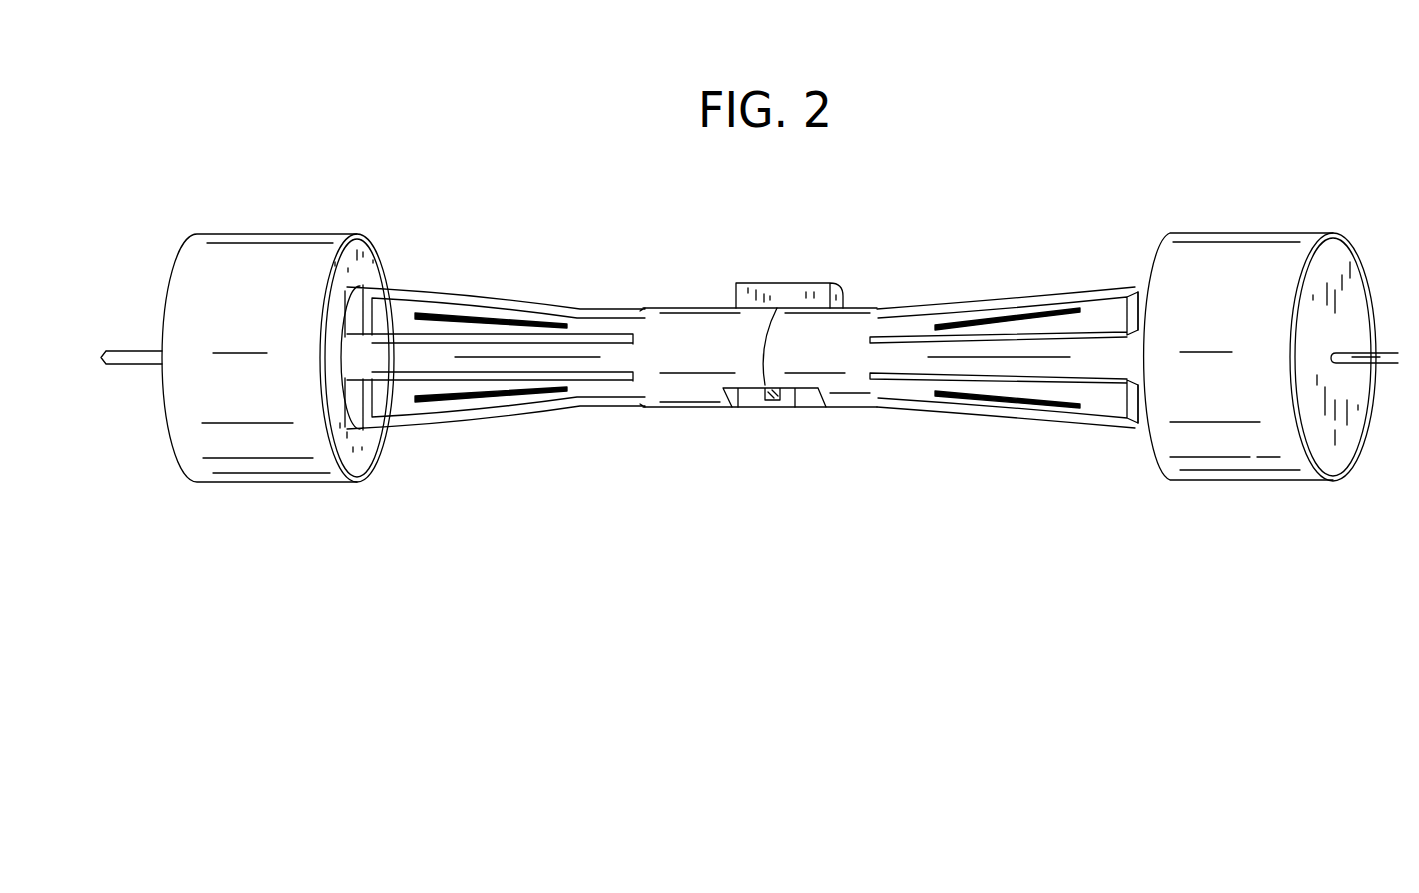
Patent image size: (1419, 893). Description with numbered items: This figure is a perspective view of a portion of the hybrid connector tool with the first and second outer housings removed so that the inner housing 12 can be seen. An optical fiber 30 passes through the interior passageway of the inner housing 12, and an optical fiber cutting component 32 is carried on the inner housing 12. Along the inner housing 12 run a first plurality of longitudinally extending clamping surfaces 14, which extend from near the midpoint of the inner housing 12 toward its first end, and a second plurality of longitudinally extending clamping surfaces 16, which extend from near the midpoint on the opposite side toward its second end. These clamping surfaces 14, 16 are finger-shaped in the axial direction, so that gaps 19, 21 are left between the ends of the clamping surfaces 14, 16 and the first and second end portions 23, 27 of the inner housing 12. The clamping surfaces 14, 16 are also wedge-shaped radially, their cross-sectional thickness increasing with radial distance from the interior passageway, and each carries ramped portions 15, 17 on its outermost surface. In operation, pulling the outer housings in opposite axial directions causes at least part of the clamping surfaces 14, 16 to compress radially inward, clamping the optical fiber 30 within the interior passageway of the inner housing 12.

The inner housing 12 is at (683, 307).
The first plurality of longitudinally extending clamping surfaces 14 is at (1105, 313).
The ramped portions 15 is at (1030, 318).
The second plurality of longitudinally extending clamping surfaces 16 is at (385, 323).
The ramped portions 17 is at (438, 318).
The gap 19 is at (1125, 327).
The gap 21 is at (367, 297).
The first end portion 23 is at (1217, 470).
The second end portion 27 is at (243, 474).
The optical fiber 30 is at (1392, 365).
The optical fiber cutting component 32 is at (790, 282).